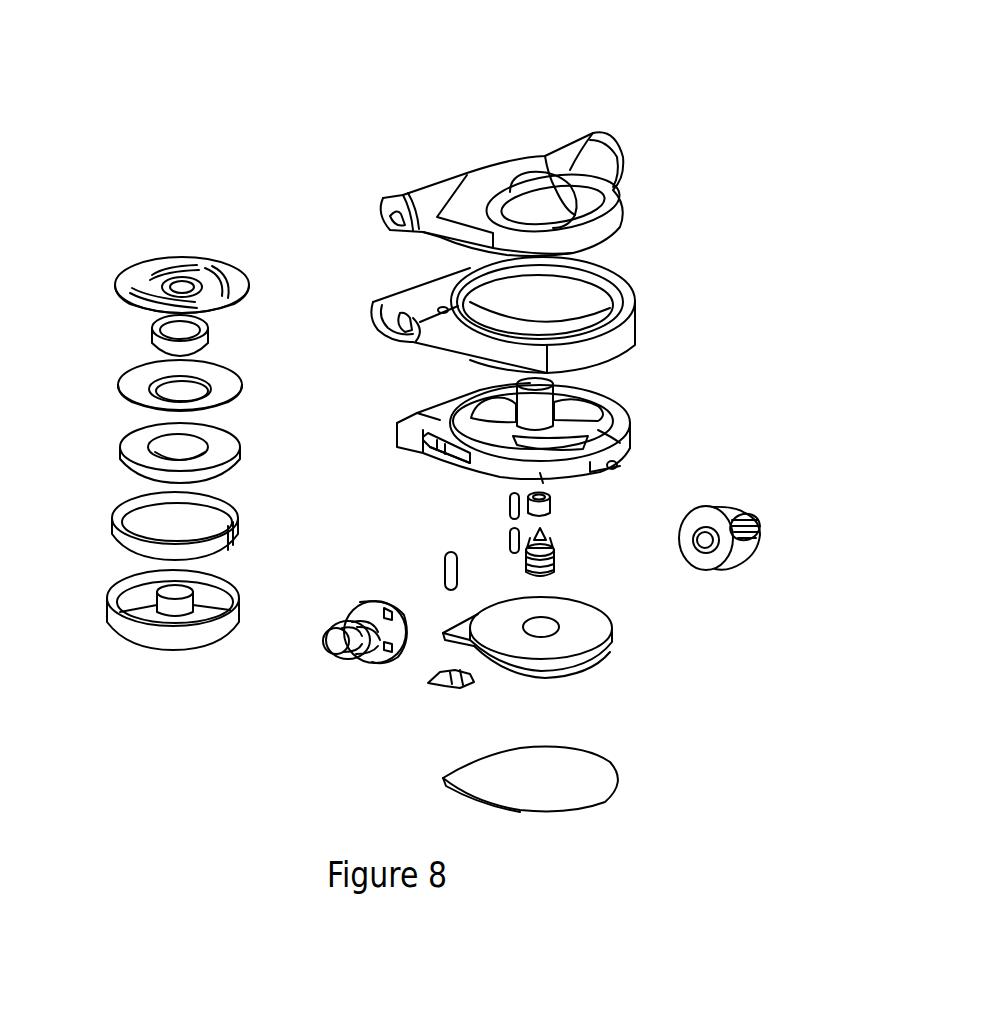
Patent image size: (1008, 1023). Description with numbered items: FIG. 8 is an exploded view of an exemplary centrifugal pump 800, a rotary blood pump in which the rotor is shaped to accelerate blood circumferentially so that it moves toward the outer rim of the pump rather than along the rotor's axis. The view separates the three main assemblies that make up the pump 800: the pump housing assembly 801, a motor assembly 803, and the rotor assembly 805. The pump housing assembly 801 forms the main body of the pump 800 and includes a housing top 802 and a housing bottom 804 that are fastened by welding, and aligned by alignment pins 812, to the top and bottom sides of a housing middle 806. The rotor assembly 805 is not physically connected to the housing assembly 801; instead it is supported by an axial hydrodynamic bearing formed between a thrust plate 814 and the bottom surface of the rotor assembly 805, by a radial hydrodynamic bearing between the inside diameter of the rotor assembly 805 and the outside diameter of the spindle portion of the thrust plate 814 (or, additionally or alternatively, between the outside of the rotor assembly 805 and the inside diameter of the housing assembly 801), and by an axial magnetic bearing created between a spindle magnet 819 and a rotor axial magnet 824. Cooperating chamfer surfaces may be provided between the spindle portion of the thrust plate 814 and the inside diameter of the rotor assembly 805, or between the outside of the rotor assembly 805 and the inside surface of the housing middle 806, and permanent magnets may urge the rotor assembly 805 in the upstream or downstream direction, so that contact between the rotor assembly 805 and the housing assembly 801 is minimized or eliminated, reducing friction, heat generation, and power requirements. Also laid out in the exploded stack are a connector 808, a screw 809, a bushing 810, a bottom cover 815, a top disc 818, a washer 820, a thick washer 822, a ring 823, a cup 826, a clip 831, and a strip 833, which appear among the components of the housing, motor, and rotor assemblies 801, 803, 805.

The centrifugal pump 800 is at (610, 90).
The pump housing assembly 801 is at (729, 319).
The housing top 802 is at (620, 197).
The motor assembly 803 is at (583, 606).
The housing bottom 804 is at (423, 423).
The rotor assembly 805 is at (94, 253).
The housing middle 806 is at (617, 282).
The connector 808 is at (340, 652).
The screw 809 is at (557, 543).
The bushing 810 is at (703, 508).
The alignment pins 812 is at (510, 510).
The thrust plate 814 is at (600, 433).
The bottom cover 815 is at (463, 772).
The top disc 818 is at (233, 262).
The spindle magnet 819 is at (552, 507).
The washer 820 is at (235, 395).
The thick washer 822 is at (240, 449).
The ring 823 is at (244, 534).
The rotor axial magnet 824 is at (212, 345).
The cup 826 is at (244, 606).
The clip 831 is at (434, 678).
The strip 833 is at (463, 450).